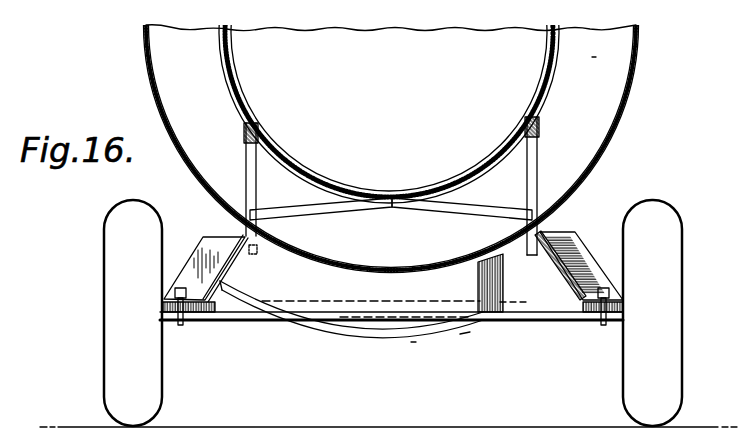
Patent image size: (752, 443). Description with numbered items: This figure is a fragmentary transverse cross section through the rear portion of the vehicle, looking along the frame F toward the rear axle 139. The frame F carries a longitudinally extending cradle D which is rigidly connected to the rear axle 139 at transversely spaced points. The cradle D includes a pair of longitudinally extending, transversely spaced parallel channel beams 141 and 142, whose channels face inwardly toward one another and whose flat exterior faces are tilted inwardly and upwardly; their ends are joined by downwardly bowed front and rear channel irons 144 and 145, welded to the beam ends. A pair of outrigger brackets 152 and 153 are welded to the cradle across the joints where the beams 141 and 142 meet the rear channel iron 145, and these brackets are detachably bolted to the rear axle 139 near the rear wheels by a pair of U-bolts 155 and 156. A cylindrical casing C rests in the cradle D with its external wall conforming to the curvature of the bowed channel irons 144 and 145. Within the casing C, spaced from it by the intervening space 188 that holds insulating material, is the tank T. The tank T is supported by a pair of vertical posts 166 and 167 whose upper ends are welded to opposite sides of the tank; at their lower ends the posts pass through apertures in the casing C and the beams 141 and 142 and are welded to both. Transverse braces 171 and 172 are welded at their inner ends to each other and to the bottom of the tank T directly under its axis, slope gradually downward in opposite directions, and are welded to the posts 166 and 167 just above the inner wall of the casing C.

The rear axle 139 is at (248, 316).
The channel beam 141 is at (230, 268).
The channel beam 142 is at (554, 264).
The front channel iron 144 is at (500, 283).
The rear channel iron 145 is at (370, 330).
The outrigger bracket 152 is at (203, 252).
The outrigger bracket 153 is at (576, 250).
The U-bolt 155 is at (192, 325).
The U-bolt 156 is at (592, 323).
The vertical post 166 is at (246, 151).
The vertical post 167 is at (538, 151).
The transverse brace 171 is at (333, 212).
The transverse brace 172 is at (447, 208).
The intervening space 188 is at (593, 57).
The tank T is at (553, 63).
The cylindrical casing C is at (630, 97).
The cradle D is at (465, 337).
The frame F is at (414, 348).